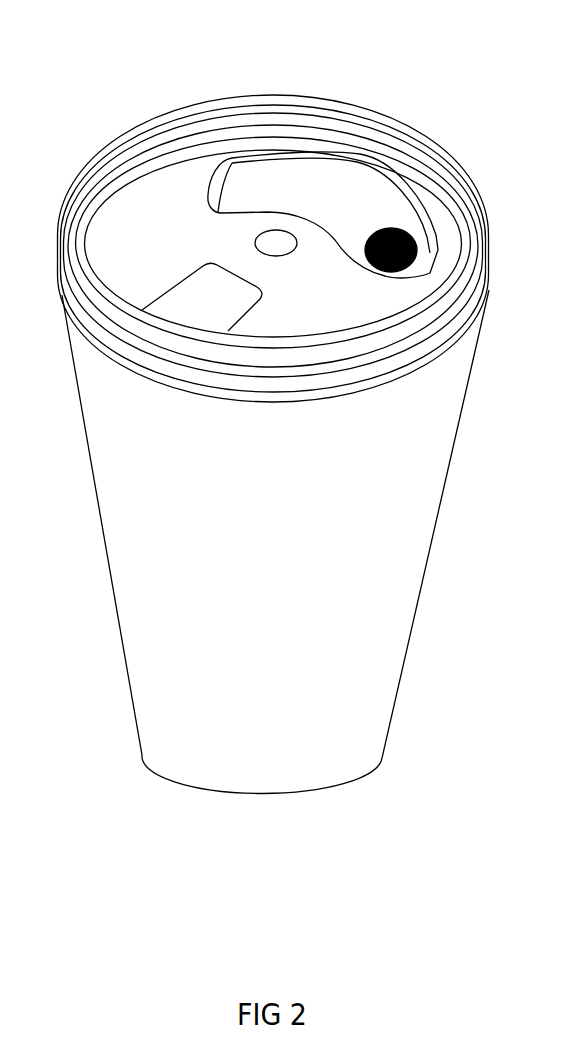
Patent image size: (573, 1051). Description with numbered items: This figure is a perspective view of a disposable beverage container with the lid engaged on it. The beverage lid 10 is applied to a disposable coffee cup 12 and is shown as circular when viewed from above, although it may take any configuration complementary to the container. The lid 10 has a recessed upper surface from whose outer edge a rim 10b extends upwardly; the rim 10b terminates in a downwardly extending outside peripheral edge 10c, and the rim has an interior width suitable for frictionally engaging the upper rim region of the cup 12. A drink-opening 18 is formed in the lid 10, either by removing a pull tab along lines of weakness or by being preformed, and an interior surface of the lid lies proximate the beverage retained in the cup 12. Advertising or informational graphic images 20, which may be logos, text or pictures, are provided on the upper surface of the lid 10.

The beverage lid 10 is at (290, 267).
The rim 10b is at (137, 138).
The outside peripheral edge 10c is at (245, 400).
The disposable cup 12 is at (428, 562).
The drink-opening 18 is at (203, 303).
The graphic images 20 is at (288, 178).